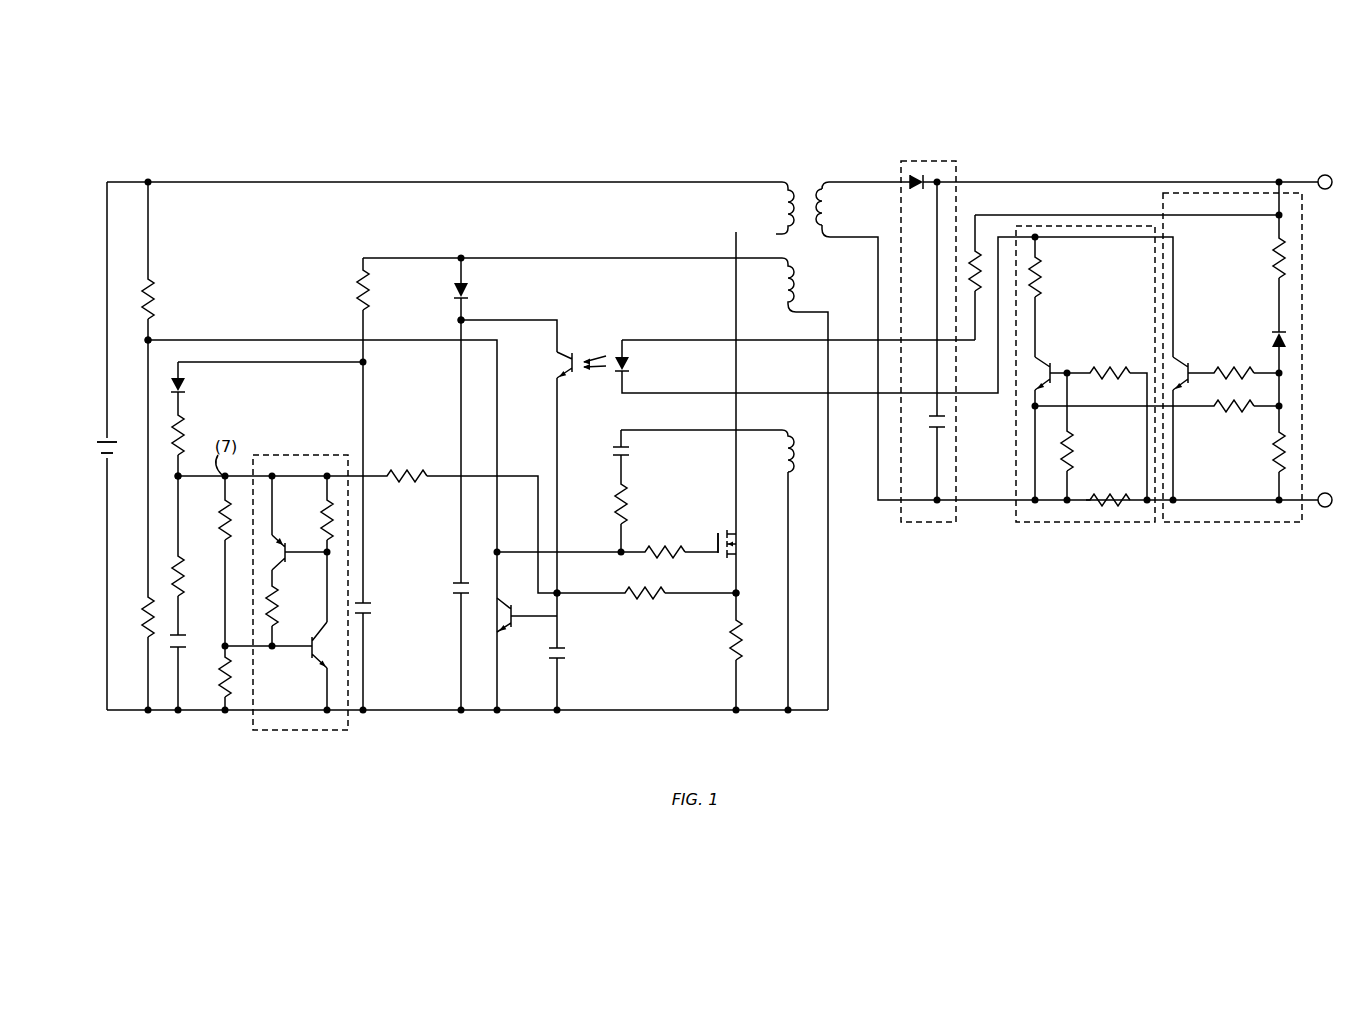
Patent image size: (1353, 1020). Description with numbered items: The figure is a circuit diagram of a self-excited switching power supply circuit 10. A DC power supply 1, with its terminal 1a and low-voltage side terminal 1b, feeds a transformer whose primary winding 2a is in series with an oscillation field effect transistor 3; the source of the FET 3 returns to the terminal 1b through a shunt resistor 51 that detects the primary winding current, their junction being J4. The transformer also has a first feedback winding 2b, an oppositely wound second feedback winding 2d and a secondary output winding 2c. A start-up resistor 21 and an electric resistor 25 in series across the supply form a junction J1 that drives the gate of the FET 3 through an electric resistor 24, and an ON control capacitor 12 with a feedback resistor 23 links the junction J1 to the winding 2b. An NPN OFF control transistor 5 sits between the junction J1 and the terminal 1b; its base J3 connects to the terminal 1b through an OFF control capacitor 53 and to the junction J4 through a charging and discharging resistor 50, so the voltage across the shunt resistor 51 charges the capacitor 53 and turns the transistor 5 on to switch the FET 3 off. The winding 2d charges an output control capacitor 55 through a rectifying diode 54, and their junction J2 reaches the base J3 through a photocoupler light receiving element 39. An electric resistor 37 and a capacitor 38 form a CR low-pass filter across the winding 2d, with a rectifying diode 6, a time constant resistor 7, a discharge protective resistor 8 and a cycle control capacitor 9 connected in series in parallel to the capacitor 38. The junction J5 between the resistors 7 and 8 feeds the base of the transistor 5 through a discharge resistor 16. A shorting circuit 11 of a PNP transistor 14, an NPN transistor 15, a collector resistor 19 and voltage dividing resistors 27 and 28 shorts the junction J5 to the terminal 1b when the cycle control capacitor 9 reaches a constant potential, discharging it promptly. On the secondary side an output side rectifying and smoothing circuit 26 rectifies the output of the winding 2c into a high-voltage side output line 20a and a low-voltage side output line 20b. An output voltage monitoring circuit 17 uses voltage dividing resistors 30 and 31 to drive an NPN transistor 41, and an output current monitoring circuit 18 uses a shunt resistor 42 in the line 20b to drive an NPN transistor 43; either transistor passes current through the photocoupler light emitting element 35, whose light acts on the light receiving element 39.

The DC power supply 1 is at (97, 453).
The battery cell 1a is at (118, 439).
The low-voltage side terminal 1b is at (120, 461).
The primary winding 2a is at (772, 210).
The first feedback winding 2b is at (772, 459).
The secondary output winding 2c is at (838, 213).
The second feedback winding 2d is at (772, 288).
The oscillation field effect transistor 3 is at (738, 544).
The OFF control transistor 5 is at (493, 615).
The rectifying diode 6 is at (188, 391).
The time constant resistor 7 is at (188, 433).
The discharge protective resistor 8 is at (188, 574).
The cycle control capacitor 9 is at (187, 646).
The self-excited switching power supply circuit 10 is at (834, 138).
The shorting circuit 11 is at (352, 728).
The ON control capacitor 12 is at (605, 451).
The PNP transistor 14 is at (296, 580).
The NPN transistor 15 is at (307, 646).
The discharge resistor 16 is at (405, 465).
The output voltage monitoring circuit 17 is at (1185, 524).
The output current monitoring circuit 18 is at (1040, 524).
The collector resistor 19 is at (312, 518).
The high-voltage side output line 20a is at (1158, 182).
The low-voltage side output line 20b is at (1240, 503).
The start-up resistor 21 is at (161, 297).
The feedback resistor 23 is at (635, 502).
The electric resistor 24 is at (663, 563).
The electric resistor 25 is at (133, 615).
The output side rectifying and smoothing circuit 26 is at (922, 524).
The voltage dividing resistor 27 is at (212, 518).
The voltage dividing resistor 28 is at (212, 675).
The voltage dividing resistor 30 is at (1263, 256).
The voltage dividing resistor 31 is at (1263, 450).
The photocoupler light emitting element 35 is at (624, 364).
The electric resistor 37 is at (348, 288).
The capacitor 38 is at (377, 615).
The photocoupler light receiving element 39 is at (550, 365).
The NPN transistor 41 is at (1189, 366).
The shunt resistor 42 is at (1108, 489).
The NPN transistor 43 is at (1047, 366).
The charging and discharging resistor 50 is at (643, 604).
The shunt resistor 51 is at (748, 638).
The OFF control capacitor 53 is at (571, 658).
The rectifying diode 54 is at (476, 289).
The output control capacitor 55 is at (447, 589).
The junction J1 is at (135, 340).
The junction J2 is at (449, 323).
The base J3 is at (560, 590).
The junction J4 is at (749, 596).
The junction J5 is at (166, 486).